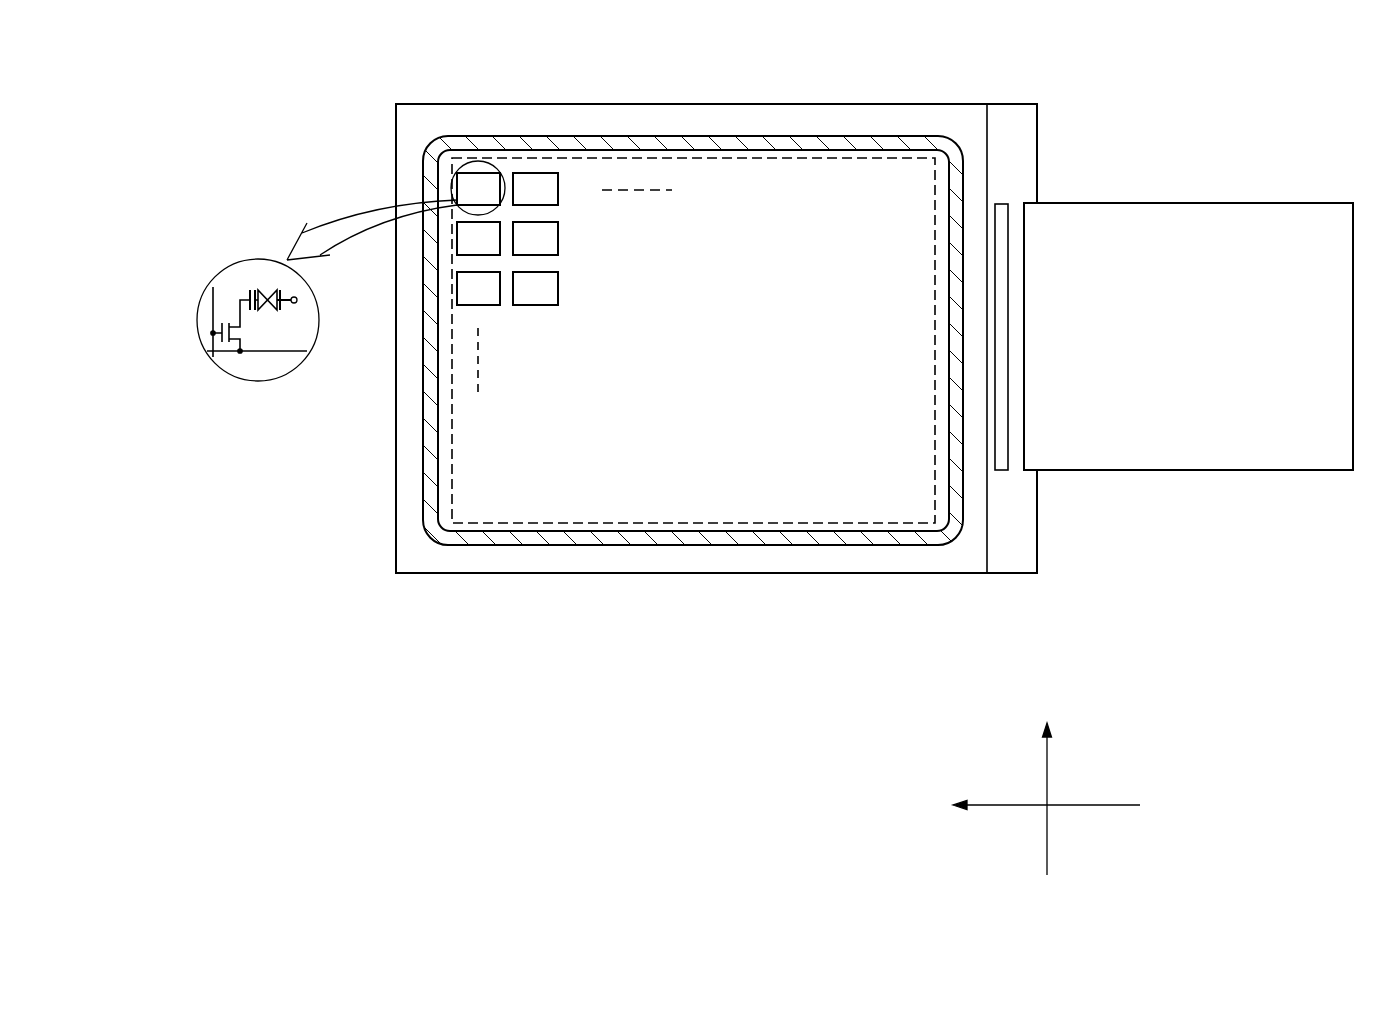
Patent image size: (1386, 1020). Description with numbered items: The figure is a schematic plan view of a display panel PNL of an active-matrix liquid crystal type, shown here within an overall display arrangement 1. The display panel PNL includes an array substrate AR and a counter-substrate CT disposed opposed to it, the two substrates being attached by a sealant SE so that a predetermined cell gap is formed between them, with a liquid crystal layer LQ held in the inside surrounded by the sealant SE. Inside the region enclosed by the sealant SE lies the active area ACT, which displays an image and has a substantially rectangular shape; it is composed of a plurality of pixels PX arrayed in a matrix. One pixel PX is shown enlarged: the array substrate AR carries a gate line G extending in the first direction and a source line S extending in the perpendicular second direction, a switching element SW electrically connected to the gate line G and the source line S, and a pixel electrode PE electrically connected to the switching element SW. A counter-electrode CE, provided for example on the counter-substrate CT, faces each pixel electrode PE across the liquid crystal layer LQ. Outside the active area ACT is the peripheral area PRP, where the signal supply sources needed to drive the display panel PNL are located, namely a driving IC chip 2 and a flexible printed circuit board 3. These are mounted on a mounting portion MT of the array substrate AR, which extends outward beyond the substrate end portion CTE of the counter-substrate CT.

The display device 1 is at (1047, 83).
The driving IC chip 2 is at (1000, 204).
The flexible printed circuit (FPC) board 3 is at (1195, 204).
The display panel PNL is at (1016, 577).
The array substrate AR is at (1030, 545).
The counter-substrate CT is at (948, 573).
The substrate end portion CTE is at (991, 123).
The mounting portion MT is at (1021, 481).
The sealant SE is at (742, 137).
The active area ACT is at (796, 538).
The peripheral area PRP is at (426, 549).
The pixel PX is at (478, 176).
The gate line G is at (206, 303).
The source line S is at (273, 352).
The switching element SW is at (252, 331).
The pixel electrode PE is at (247, 298).
The liquid crystal layer LQ is at (265, 288).
The counter-electrode CE is at (292, 308).